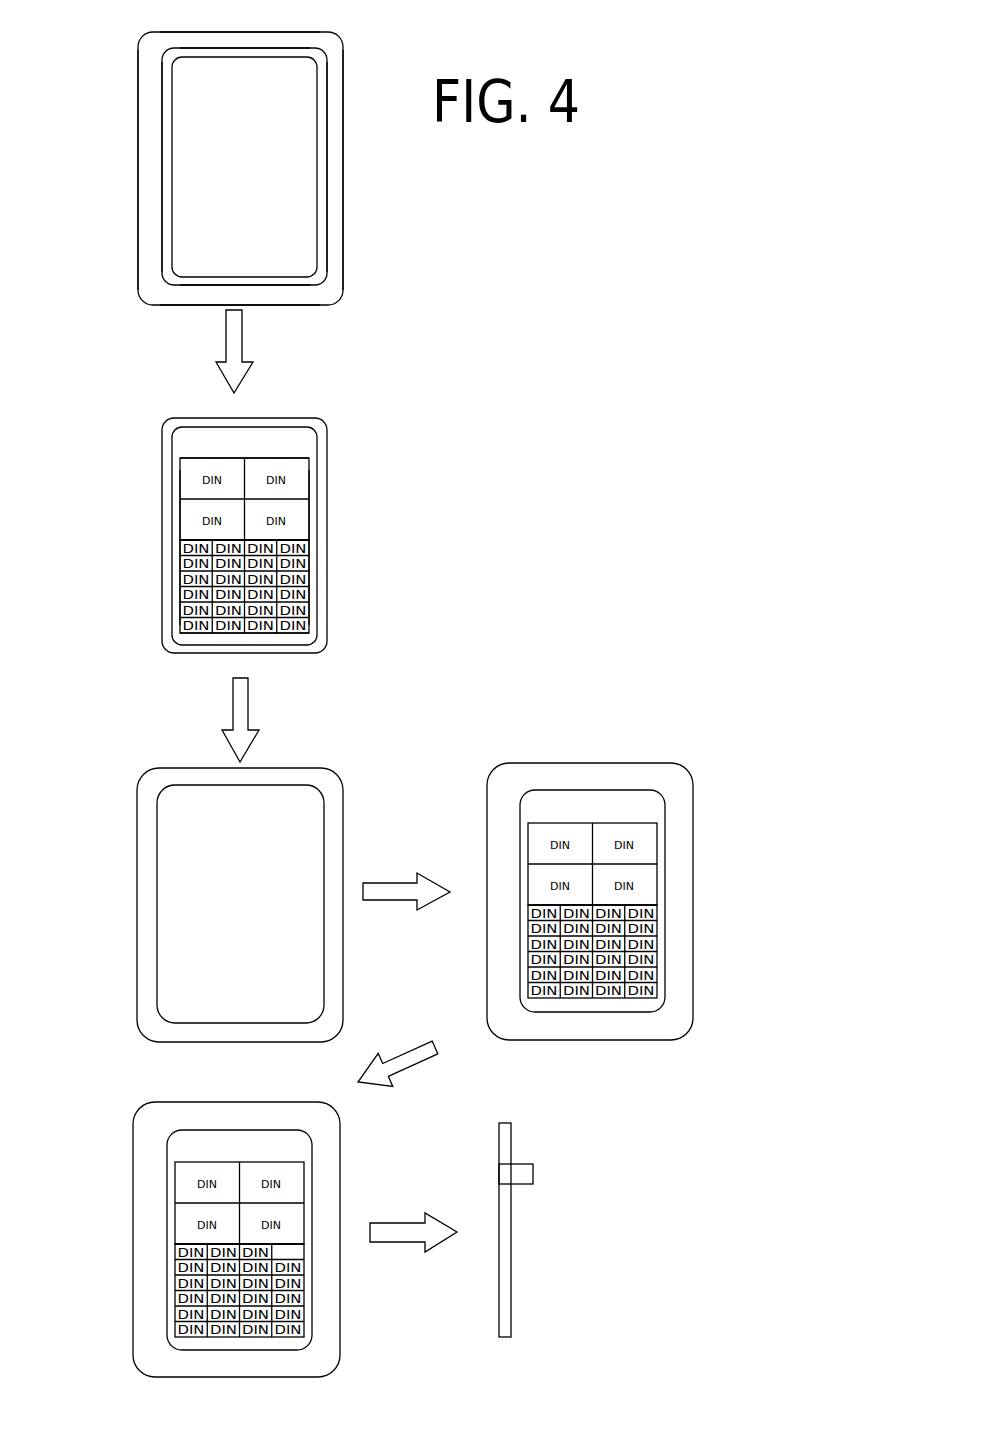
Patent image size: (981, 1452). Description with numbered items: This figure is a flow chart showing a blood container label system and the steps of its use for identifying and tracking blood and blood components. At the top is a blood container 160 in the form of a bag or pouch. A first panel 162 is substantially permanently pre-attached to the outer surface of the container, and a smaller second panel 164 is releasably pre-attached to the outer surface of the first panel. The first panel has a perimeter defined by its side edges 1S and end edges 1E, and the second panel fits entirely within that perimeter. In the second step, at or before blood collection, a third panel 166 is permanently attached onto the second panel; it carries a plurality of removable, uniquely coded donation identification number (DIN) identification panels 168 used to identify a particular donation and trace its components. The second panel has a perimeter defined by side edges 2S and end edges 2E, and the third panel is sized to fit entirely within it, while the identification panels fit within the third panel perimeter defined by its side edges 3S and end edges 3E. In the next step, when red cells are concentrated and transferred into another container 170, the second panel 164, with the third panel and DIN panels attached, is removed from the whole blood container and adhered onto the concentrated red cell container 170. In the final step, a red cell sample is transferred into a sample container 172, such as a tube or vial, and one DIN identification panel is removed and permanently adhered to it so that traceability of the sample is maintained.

The blood container 160 is at (337, 50).
The first panel 162 is at (320, 137).
The second panel 164 is at (288, 208).
The third panel 166 is at (303, 459).
The DIN identification panels 168 is at (287, 523).
The concentrated red cell container 170 is at (675, 778).
The sample container 172 is at (505, 1138).
The end edges of first panel 1E is at (290, 49).
The end edges of second panel 2E is at (237, 52).
The end edges of third panel 3E is at (268, 457).
The side edges of first panel 1S is at (162, 223).
The side edges of second panel 2S is at (172, 190).
The side edges of third panel 3S is at (178, 593).